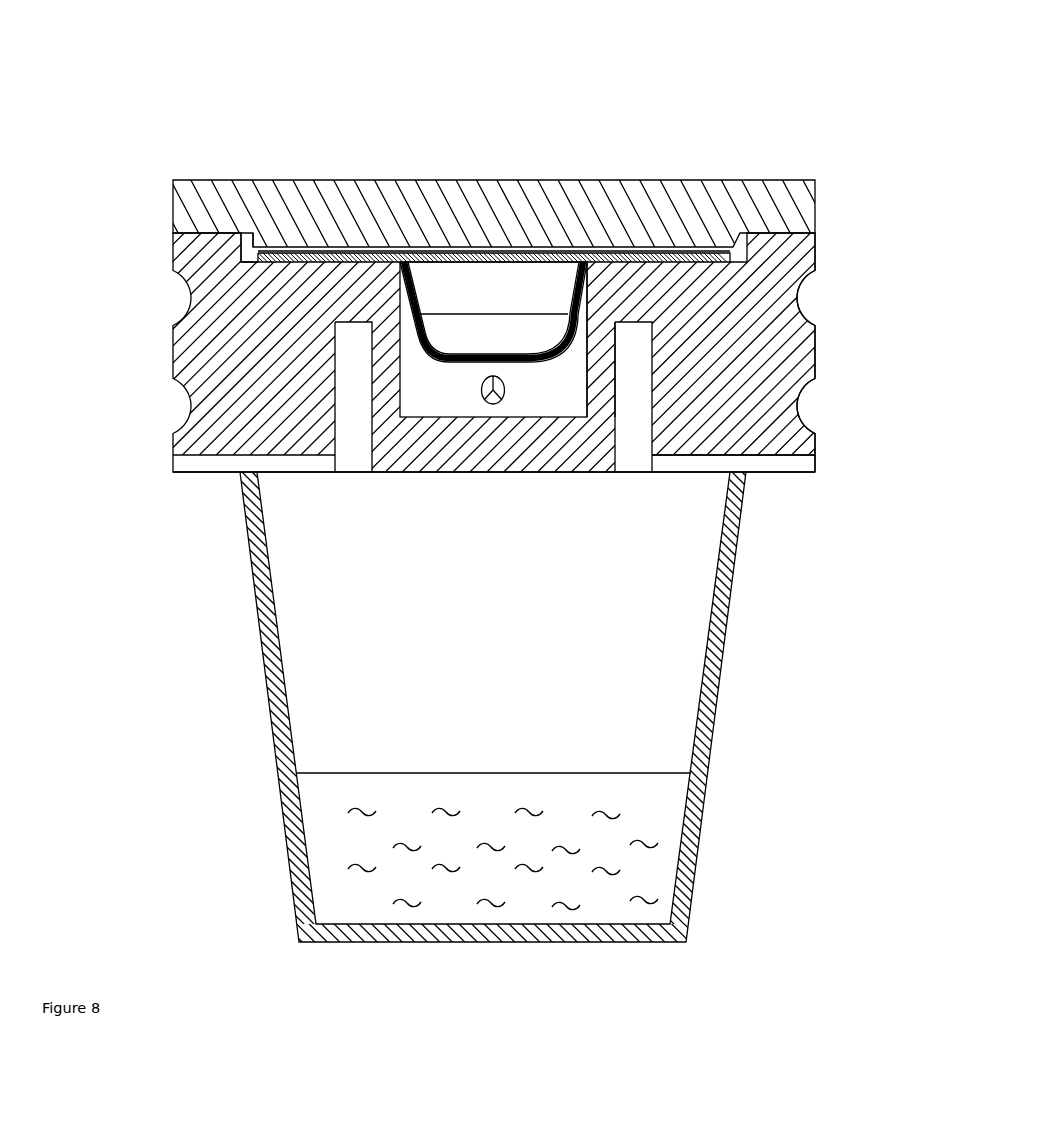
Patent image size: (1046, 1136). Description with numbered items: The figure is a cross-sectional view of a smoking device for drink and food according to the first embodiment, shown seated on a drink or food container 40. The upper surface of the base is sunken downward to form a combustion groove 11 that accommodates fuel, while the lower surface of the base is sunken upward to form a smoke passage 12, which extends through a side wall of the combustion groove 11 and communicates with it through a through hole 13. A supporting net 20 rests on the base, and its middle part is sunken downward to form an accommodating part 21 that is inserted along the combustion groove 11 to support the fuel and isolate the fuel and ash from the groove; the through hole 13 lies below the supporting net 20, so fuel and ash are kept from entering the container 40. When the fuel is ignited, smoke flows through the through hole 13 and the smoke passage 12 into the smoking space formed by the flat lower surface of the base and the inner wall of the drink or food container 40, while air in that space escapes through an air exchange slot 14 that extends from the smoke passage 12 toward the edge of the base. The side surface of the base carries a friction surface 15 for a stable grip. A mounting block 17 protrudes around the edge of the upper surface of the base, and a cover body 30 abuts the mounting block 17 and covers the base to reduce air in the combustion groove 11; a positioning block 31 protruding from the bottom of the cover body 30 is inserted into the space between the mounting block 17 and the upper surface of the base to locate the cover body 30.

The combustion groove 11 is at (418, 387).
The smoke passage 12 is at (352, 445).
The through hole 13 is at (602, 397).
The air exchange slot 14 is at (298, 462).
The friction surface 15 is at (815, 360).
The mounting block 17 is at (213, 240).
The supporting net 20 is at (703, 253).
The accommodating part 21 is at (430, 340).
The cover body 30 is at (575, 190).
The positioning block 31 is at (255, 240).
The drink or food container 40 is at (700, 742).